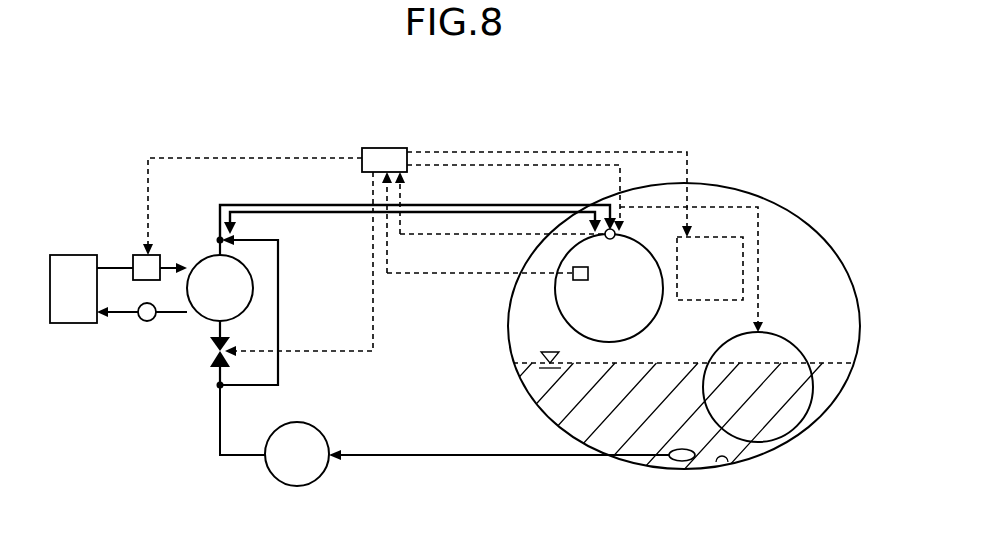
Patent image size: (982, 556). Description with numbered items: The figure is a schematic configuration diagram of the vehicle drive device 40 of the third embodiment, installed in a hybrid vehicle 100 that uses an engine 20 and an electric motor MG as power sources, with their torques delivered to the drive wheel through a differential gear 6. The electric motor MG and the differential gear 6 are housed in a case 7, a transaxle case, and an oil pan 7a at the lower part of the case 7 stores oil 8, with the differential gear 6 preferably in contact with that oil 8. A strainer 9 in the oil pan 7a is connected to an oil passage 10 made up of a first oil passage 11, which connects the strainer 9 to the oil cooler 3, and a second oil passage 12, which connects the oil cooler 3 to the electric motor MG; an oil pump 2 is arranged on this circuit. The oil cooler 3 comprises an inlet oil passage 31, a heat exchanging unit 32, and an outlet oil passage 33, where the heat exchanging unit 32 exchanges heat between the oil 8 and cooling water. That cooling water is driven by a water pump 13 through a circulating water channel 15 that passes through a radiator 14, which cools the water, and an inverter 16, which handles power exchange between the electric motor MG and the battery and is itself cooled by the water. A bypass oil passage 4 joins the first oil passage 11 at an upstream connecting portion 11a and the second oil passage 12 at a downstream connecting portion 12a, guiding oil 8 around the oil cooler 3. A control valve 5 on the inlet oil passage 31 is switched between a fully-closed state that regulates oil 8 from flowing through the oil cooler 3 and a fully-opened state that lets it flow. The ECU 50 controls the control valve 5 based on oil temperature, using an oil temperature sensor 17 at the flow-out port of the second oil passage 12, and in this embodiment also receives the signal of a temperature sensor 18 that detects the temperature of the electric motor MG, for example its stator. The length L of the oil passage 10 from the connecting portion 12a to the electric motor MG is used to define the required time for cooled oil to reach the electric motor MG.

The vehicle 100 is at (119, 100).
The vehicle drive device 40 is at (211, 151).
The ECU 50 is at (378, 148).
The radiator 14 is at (73, 255).
The circulating water channel 15 is at (113, 268).
The inverter 16 is at (158, 255).
The water pump 13 is at (147, 321).
The oil cooler 3 is at (333, 268).
The heat exchanging unit 32 is at (254, 290).
The outlet oil passage 33 is at (226, 247).
The inlet oil passage 31 is at (222, 378).
The control valve 5 is at (208, 362).
The bypass oil passage 4 is at (280, 250).
The connecting portion 12a is at (217, 239).
The connecting portion 11a is at (217, 386).
The oil passage 10 is at (455, 298).
The second oil passage 12 is at (435, 214).
The first oil passage 11 is at (440, 453).
The oil pump 2 is at (297, 487).
The length L is at (356, 213).
The case 7 is at (727, 185).
The electric motor MG is at (570, 326).
The oil temperature sensor 17 is at (605, 240).
The temperature sensor 18 is at (573, 276).
The engine 20 is at (714, 300).
The oil 8 is at (680, 363).
The differential gear 6 is at (776, 333).
The strainer 9 is at (685, 462).
The oil pan 7a is at (722, 465).